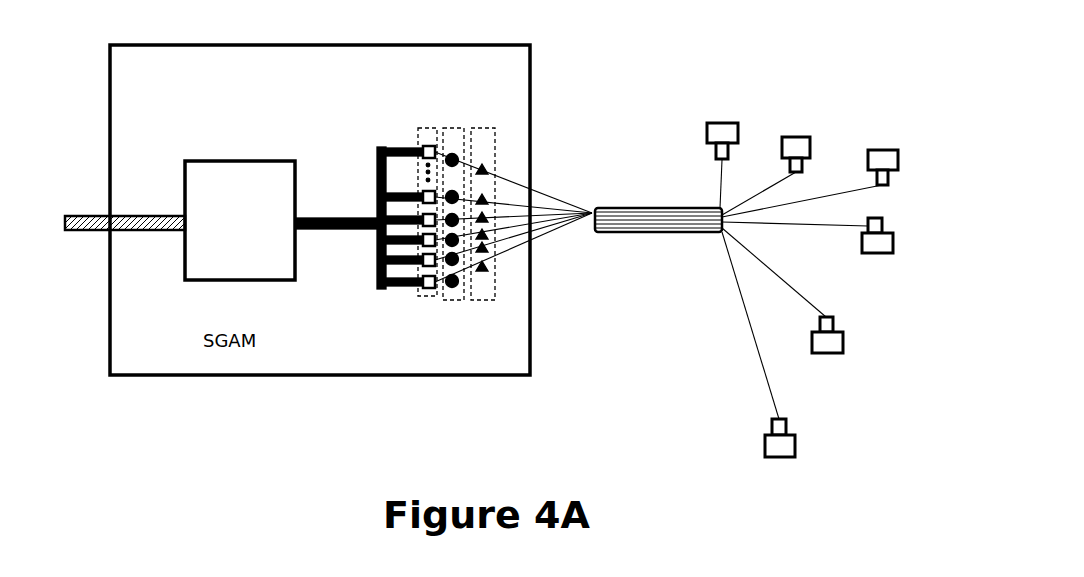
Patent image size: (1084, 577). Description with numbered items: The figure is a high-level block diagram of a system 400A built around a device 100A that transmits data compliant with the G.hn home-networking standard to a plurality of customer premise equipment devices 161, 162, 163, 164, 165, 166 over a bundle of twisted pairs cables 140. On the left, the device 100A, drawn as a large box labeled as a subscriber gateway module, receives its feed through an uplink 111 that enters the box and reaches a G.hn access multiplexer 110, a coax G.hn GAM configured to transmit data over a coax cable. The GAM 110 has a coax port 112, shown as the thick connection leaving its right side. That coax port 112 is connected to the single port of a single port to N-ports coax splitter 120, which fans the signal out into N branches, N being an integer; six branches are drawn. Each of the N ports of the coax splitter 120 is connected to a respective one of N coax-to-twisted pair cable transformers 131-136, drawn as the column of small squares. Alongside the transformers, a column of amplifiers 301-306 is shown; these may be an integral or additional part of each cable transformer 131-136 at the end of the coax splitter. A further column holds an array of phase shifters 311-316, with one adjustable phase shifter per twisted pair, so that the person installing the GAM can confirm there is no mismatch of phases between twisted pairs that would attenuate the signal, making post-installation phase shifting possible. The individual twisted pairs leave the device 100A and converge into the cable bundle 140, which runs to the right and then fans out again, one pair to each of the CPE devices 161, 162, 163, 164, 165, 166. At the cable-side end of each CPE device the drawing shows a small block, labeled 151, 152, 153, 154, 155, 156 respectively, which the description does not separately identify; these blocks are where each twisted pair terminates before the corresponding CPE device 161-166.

The device 100A is at (237, 45).
The G.hn access multiplexer 110 is at (230, 160).
The uplink 111 is at (140, 215).
The coax port 112 is at (318, 232).
The coax splitter 120 is at (395, 146).
The coax-to-twisted pair cable transformers 131-136 is at (462, 335).
The amplifiers 301-306 is at (442, 127).
The phase shifters 311-316 is at (495, 127).
The bundle of twisted pairs cables 140 is at (650, 207).
The subscriber device adapter 151 is at (714, 157).
The subscriber device adapter 152 is at (805, 166).
The subscriber device adapter 153 is at (895, 183).
The subscriber device adapter 154 is at (885, 220).
The subscriber device adapter 155 is at (836, 320).
The subscriber device adapter 156 is at (788, 424).
The customer premise equipment device 161 is at (722, 123).
The customer premise equipment device 162 is at (812, 142).
The customer premise equipment device 163 is at (890, 150).
The customer premise equipment device 164 is at (897, 244).
The customer premise equipment device 165 is at (845, 343).
The customer premise equipment device 166 is at (797, 445).
The system 400A is at (606, 385).